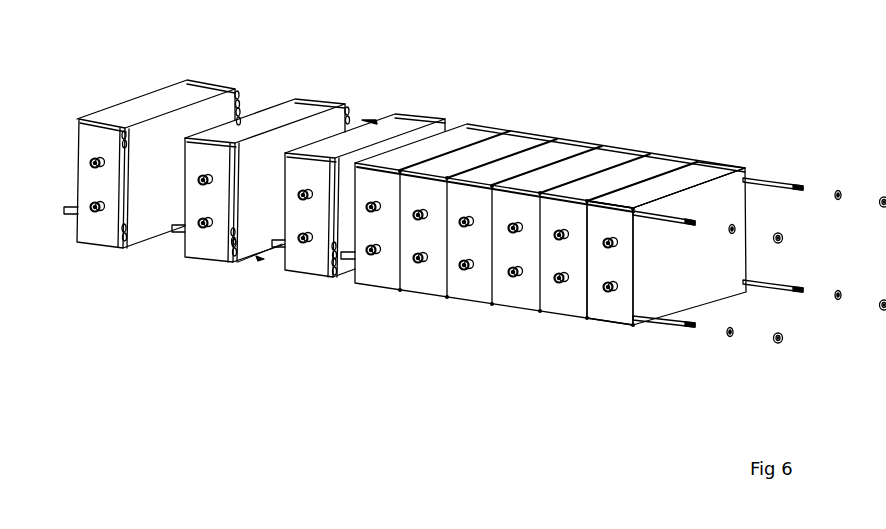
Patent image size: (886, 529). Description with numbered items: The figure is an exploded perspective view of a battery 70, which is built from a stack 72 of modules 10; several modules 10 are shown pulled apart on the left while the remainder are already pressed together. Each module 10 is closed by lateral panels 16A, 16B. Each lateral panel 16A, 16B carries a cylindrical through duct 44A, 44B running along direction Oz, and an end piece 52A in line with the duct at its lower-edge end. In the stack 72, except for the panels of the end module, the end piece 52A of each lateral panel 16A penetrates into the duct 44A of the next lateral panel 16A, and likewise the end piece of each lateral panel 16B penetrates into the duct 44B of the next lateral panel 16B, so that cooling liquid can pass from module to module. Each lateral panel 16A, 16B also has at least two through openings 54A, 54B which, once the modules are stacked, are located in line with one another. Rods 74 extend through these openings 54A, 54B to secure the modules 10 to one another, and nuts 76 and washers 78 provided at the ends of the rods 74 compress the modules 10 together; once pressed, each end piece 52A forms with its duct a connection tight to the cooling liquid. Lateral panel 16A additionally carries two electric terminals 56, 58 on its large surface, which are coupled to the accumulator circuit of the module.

The module 10 is at (203, 92).
The lateral panel 16A is at (603, 318).
The lateral panel 16B is at (713, 162).
The through duct 44A is at (238, 241).
The through duct 44B is at (243, 114).
The end piece 52A is at (287, 246).
The through opening 54A is at (130, 134).
The through opening 54B is at (243, 96).
The electric terminal 56 is at (562, 232).
The electric terminal 58 is at (565, 283).
The battery 70 is at (657, 86).
The stack 72 is at (546, 134).
The rod 74 is at (775, 178).
The nut 76 is at (780, 345).
The washer 78 is at (731, 340).